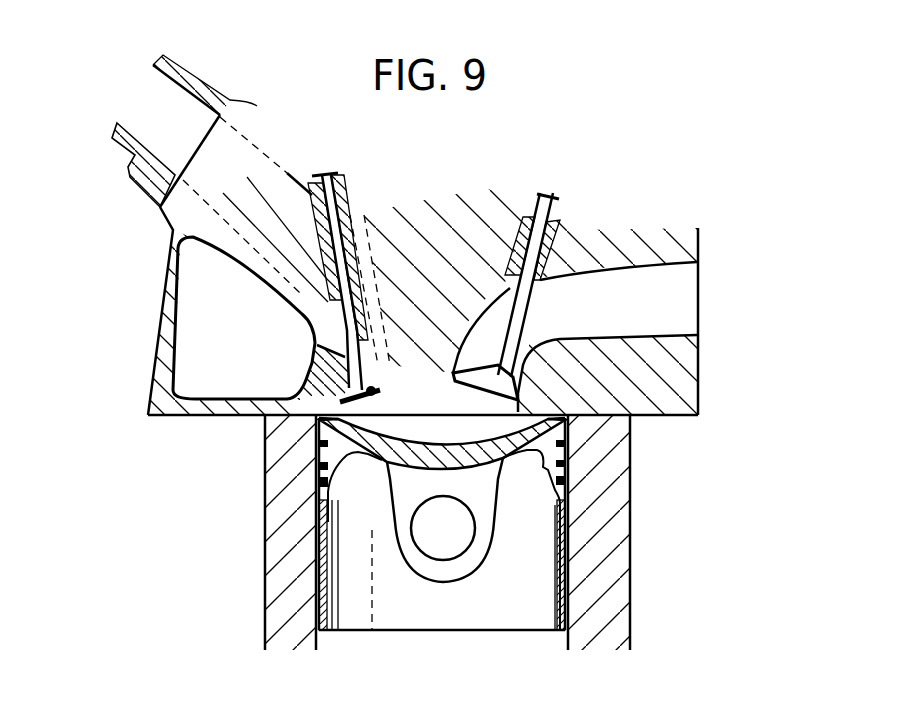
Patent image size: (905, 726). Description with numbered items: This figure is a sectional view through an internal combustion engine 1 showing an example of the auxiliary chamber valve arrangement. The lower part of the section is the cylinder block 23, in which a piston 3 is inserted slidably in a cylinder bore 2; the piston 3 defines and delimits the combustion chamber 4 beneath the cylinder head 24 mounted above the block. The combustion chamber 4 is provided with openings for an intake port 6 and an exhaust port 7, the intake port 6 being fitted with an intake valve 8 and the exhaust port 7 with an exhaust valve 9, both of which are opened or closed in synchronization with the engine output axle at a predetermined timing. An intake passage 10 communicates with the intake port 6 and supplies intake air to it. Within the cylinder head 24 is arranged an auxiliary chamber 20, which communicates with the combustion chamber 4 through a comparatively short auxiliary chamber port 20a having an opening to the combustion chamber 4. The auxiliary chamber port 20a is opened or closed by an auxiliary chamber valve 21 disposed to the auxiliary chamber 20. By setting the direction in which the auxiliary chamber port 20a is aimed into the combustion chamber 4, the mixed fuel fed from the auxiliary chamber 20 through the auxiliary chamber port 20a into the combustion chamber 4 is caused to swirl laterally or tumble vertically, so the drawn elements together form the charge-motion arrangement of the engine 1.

The internal combustion engine 1 is at (491, 532).
The cylinder bore 2 is at (312, 556).
The piston 3 is at (442, 524).
The combustion chamber 4 is at (490, 427).
The intake port 6 is at (393, 372).
The exhaust port 7 is at (688, 298).
The intake valve 8 is at (368, 360).
The exhaust valve 9 is at (513, 318).
The intake passage 10 is at (142, 113).
The auxiliary chamber 20 is at (185, 340).
The auxiliary chamber port 20a is at (323, 363).
The auxiliary chamber valve 21 is at (381, 391).
The cylinder block 23 is at (663, 517).
The cylinder head 24 is at (688, 383).